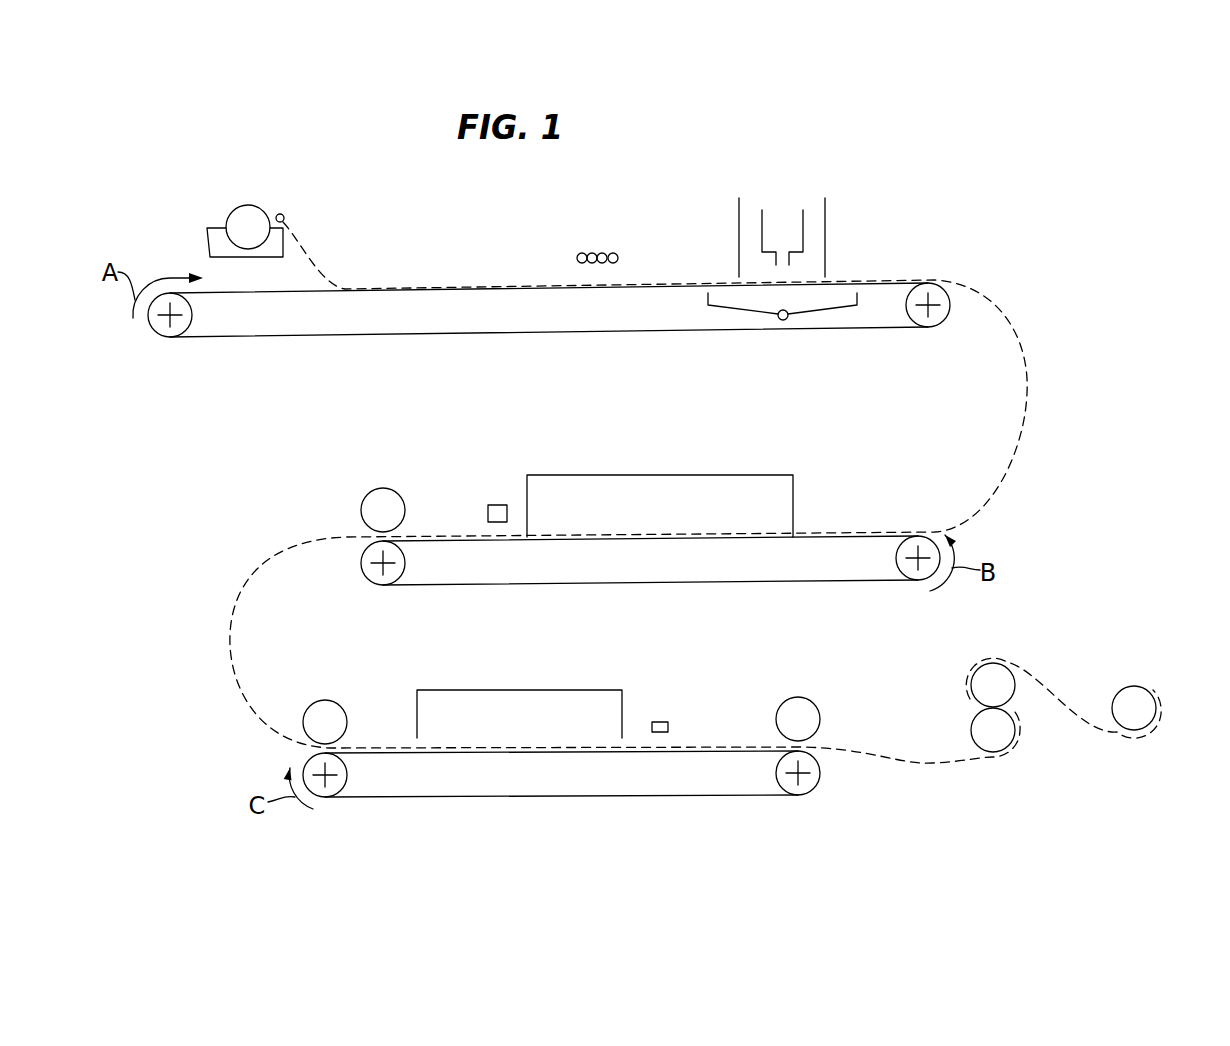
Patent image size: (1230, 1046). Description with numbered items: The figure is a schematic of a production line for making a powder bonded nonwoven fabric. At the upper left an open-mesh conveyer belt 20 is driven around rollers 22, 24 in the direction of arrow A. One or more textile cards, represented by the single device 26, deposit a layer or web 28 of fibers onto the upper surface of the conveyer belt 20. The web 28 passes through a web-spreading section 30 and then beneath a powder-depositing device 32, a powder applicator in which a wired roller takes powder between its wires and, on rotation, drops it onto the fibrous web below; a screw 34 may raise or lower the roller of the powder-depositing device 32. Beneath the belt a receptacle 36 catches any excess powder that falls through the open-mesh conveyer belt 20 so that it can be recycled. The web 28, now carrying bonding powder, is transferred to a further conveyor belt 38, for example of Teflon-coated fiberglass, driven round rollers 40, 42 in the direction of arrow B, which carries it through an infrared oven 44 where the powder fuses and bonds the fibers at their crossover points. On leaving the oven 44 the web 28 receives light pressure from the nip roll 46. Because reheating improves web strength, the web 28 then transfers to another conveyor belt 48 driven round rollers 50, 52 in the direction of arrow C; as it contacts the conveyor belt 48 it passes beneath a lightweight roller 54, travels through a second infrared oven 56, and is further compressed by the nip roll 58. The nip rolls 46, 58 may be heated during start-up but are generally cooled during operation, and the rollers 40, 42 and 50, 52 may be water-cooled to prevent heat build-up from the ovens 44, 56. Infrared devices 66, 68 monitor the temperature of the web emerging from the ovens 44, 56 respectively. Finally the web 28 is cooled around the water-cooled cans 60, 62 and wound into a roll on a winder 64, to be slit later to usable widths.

The open-mesh conveyer belt 20 is at (257, 295).
The roller 22 is at (168, 338).
The roller 24 is at (938, 320).
The textile card 26 is at (273, 213).
The web 28 is at (372, 291).
The web-spreading section 30 is at (611, 252).
The powder-depositing device 32 is at (797, 223).
The screw 34 is at (739, 210).
The receptacle 36 is at (745, 314).
The conveyor belt 38 is at (813, 581).
The roller 40 is at (914, 581).
The roller 42 is at (370, 585).
The infrared oven 44 is at (707, 475).
The nip roll 46 is at (370, 503).
The conveyor belt 48 is at (528, 797).
The roller 50 is at (325, 797).
The roller 52 is at (808, 786).
The lightweight roller 54 is at (325, 712).
The second infrared oven 56 is at (525, 690).
The nip roll 58 is at (805, 710).
The water-cooled can 60 is at (975, 737).
The water-cooled can 62 is at (1003, 690).
The winder 64 is at (1143, 700).
The infrared device 66 is at (487, 511).
The infrared device 68 is at (670, 722).